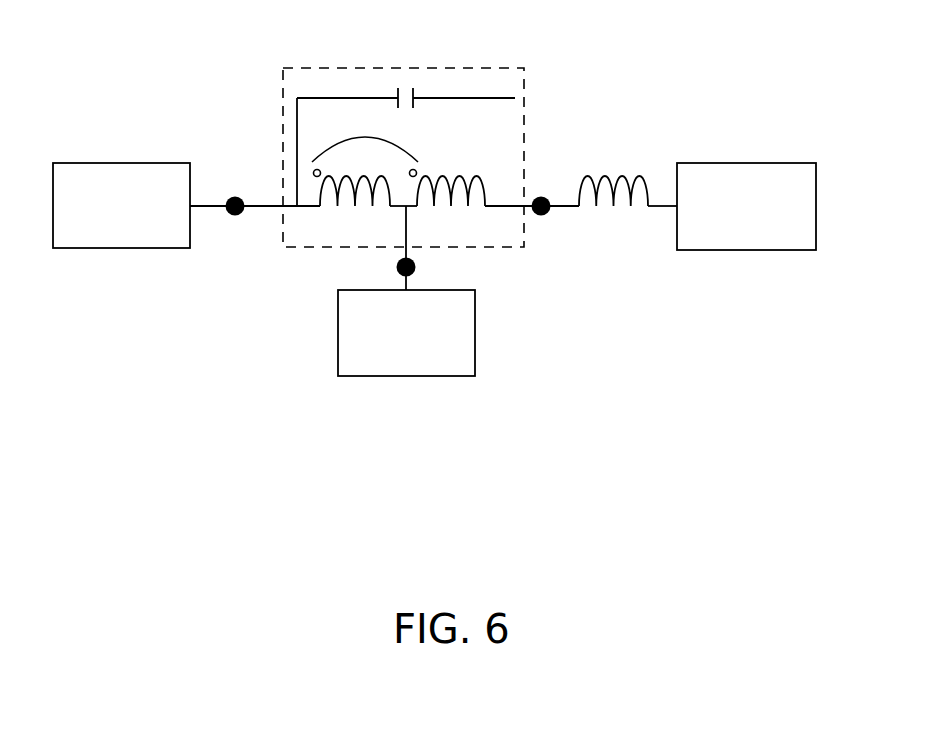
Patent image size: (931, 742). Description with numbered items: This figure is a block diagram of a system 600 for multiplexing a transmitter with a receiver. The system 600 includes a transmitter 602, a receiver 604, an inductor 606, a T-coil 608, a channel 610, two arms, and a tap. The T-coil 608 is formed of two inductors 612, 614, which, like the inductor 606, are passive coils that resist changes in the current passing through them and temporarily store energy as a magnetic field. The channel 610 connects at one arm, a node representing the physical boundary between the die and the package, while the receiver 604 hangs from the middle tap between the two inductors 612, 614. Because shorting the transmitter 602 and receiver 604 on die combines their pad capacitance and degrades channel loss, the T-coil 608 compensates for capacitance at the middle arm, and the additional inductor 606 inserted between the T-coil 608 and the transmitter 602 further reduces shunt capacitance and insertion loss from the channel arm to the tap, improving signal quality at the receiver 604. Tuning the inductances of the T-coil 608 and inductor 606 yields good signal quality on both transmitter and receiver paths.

The system 600 is at (429, 309).
The transmitter 602 is at (755, 163).
The receiver 604 is at (382, 376).
The inductor 606 is at (605, 175).
The T-coil 608 is at (378, 132).
The channel 610 is at (105, 163).
The inductor 612 is at (451, 209).
The inductor 614 is at (355, 209).